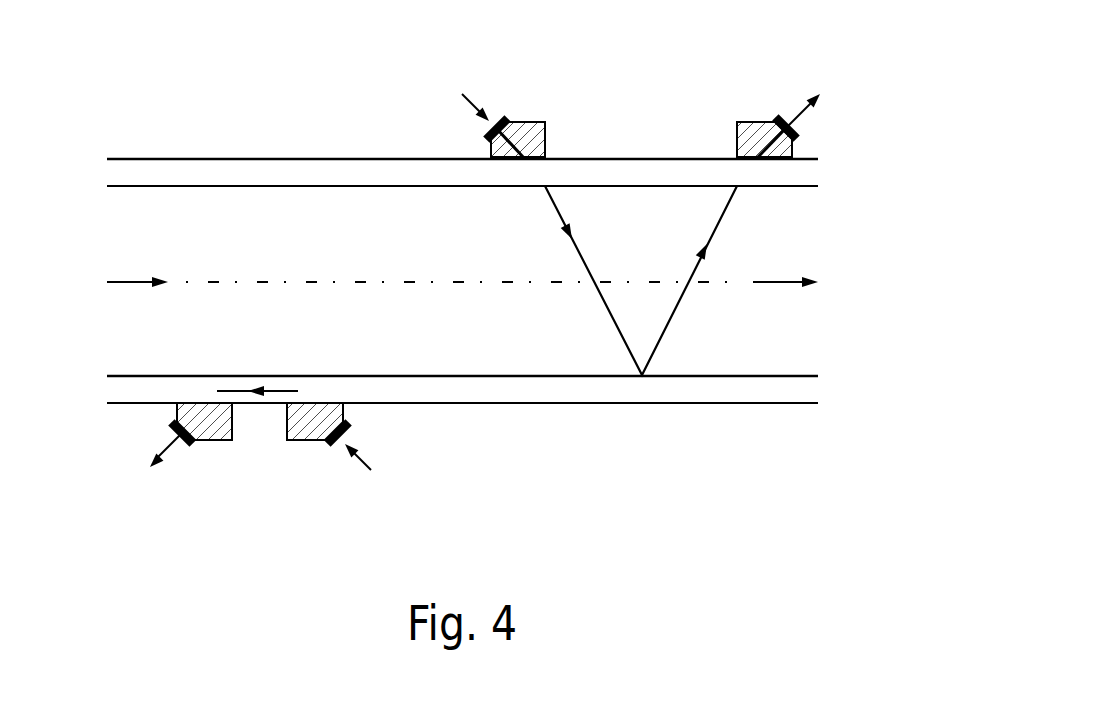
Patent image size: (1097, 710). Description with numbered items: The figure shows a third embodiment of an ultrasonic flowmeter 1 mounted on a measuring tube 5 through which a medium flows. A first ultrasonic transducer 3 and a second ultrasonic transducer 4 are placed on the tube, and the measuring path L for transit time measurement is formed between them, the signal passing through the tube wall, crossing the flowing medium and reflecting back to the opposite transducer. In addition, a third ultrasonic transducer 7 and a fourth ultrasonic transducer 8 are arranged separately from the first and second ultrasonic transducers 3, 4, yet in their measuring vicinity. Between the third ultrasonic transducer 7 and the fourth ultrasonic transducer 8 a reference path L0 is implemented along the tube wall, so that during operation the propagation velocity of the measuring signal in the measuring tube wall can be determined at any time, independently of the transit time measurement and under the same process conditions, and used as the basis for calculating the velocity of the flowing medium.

The ultrasonic flowmeter 1 is at (245, 77).
The first ultrasonic transducer 3 is at (532, 122).
The second ultrasonic transducer 4 is at (756, 122).
The measuring tube / pipe wall 5 is at (683, 390).
The third ultrasonic transducer 7 is at (208, 440).
The fourth ultrasonic transducer 8 is at (308, 440).
The measuring path L is at (620, 333).
The reference path L0 is at (277, 391).